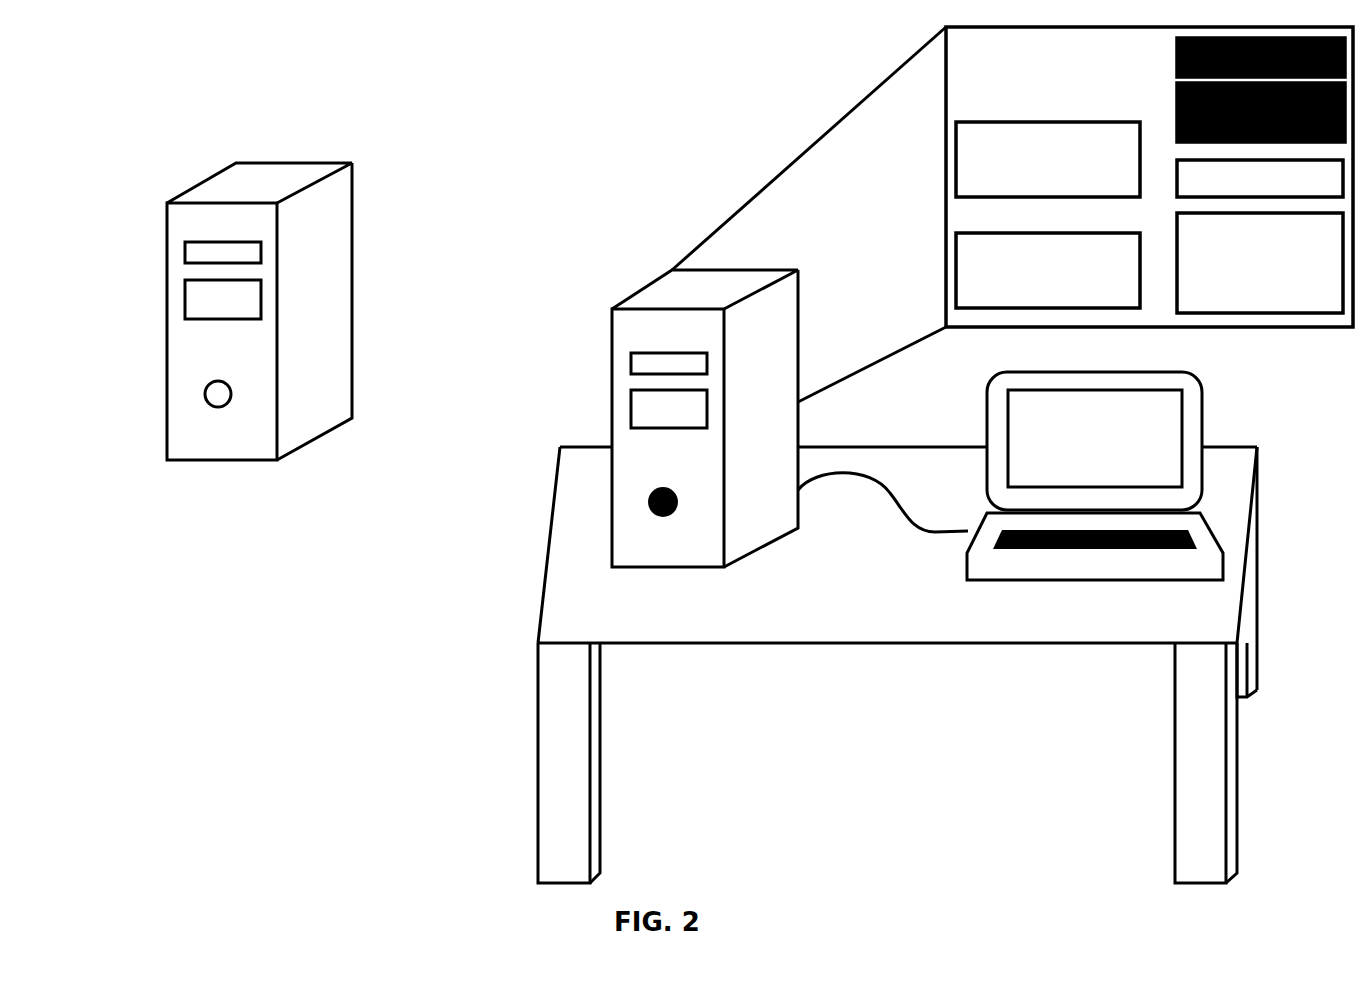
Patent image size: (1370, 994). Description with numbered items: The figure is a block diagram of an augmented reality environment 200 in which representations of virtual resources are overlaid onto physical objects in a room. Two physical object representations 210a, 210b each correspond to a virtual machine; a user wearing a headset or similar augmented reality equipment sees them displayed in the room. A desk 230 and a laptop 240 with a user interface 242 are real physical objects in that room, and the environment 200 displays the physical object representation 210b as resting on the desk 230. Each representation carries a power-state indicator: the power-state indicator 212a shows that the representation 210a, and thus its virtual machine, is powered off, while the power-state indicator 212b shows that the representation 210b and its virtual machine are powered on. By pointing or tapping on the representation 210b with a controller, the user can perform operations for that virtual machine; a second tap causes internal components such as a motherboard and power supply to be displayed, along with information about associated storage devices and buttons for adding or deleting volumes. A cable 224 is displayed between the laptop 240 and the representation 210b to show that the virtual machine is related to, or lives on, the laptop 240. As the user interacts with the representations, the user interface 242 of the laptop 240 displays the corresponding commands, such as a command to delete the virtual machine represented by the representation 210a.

The augmented reality environment 200 is at (168, 76).
The physical object representation 210a is at (199, 183).
The physical object representation 210b is at (632, 298).
The power-state indicator 212a is at (205, 393).
The power-state indicator 212b is at (648, 502).
The cable 224 is at (905, 520).
The desk 230 is at (545, 605).
The laptop 240 is at (1200, 383).
The user interface 242 is at (1167, 447).